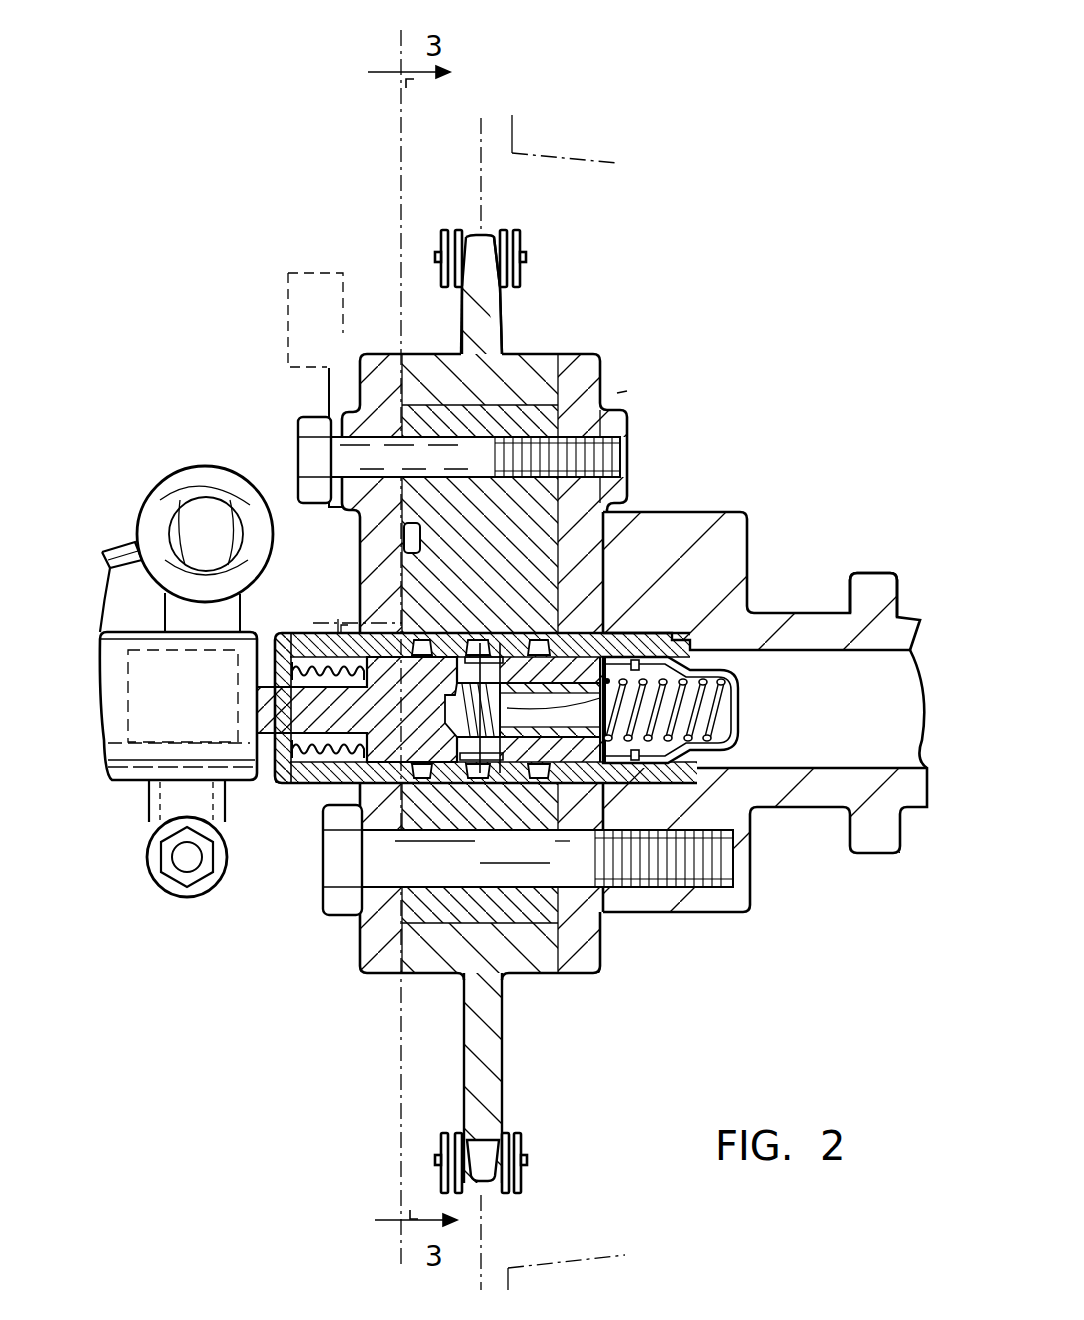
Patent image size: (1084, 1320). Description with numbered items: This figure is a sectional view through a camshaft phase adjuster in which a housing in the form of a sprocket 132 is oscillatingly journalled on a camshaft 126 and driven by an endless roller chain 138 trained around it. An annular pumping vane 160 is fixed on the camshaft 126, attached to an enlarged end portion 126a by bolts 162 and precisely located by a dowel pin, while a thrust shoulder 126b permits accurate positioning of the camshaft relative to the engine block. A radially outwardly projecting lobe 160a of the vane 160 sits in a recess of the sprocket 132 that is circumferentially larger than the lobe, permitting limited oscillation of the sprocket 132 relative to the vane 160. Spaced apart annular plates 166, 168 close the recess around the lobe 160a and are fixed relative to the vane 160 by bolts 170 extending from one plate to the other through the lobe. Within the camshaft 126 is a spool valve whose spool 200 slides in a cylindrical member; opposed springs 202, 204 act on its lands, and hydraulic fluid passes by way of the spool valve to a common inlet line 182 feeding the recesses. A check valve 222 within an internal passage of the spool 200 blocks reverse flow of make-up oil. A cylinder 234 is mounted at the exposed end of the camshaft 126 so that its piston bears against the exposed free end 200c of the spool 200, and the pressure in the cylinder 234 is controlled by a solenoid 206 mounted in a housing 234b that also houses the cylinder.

The camshaft 126 is at (910, 625).
The enlarged end portion 126a is at (722, 520).
The thrust shoulder 126b is at (857, 575).
The sprocket 132 is at (488, 328).
The endless roller chain 138 is at (522, 242).
The annular pumping vane 160 is at (552, 497).
The radially outwardly projecting lobe 160a is at (606, 414).
The bolts 162 is at (357, 944).
The annular plate 166 is at (615, 422).
The annular plate 168 is at (372, 968).
The bolts 170 is at (357, 470).
The common inlet line 182 is at (427, 632).
The spool 200 is at (320, 785).
The exposed free end 200c is at (262, 725).
The spring 202 is at (716, 660).
The spring 204 is at (302, 786).
The solenoid 206 is at (185, 468).
The check valve 222 is at (600, 786).
The cylinder 234 is at (290, 662).
The housing 234b is at (150, 790).